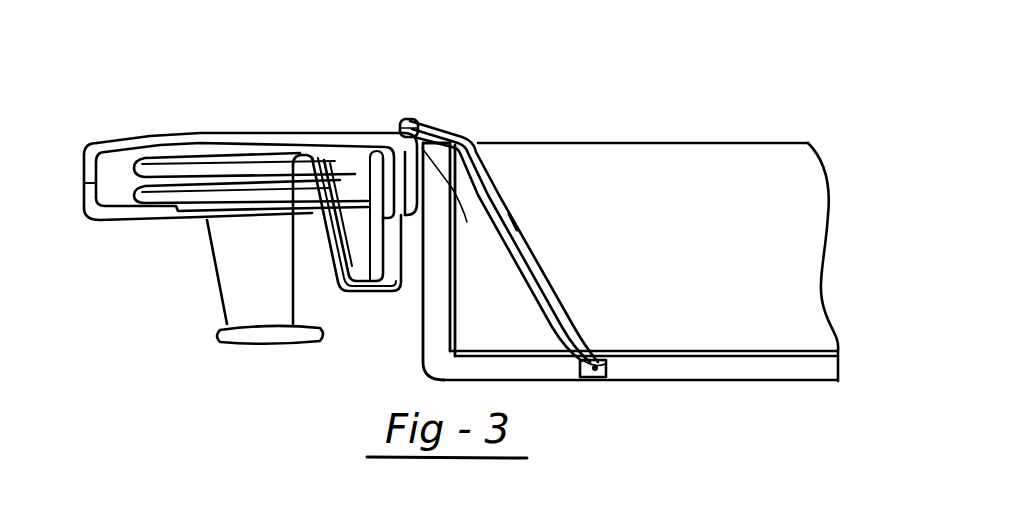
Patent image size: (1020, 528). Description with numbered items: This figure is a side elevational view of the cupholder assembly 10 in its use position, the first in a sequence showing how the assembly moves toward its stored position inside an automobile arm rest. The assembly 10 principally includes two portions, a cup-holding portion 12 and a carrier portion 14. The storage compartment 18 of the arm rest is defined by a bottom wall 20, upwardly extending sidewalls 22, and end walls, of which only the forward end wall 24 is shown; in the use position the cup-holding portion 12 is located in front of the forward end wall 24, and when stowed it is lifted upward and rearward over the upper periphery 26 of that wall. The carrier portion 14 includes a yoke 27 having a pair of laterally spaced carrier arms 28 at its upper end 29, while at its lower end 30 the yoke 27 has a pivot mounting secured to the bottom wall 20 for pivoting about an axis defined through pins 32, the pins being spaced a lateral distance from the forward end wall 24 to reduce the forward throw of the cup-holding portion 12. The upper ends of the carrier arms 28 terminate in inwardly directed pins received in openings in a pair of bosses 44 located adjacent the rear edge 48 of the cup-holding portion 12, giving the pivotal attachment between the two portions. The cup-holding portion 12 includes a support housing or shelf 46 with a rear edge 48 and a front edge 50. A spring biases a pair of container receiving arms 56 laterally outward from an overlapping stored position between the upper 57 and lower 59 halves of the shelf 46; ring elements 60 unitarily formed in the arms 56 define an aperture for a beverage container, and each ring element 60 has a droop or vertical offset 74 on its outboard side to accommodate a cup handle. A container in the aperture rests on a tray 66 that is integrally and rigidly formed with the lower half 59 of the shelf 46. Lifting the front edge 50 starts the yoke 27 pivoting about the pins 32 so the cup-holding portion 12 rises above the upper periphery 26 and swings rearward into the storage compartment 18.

The cupholder assembly 10 is at (551, 80).
The cup-holding portion 12 is at (160, 330).
The carrier portion 14 is at (559, 219).
The storage compartment 18 is at (768, 248).
The bottom wall 20 is at (704, 349).
The sidewalls 22 is at (651, 154).
The forward end wall 24 is at (459, 310).
The upper periphery 26 is at (458, 136).
The yoke 27 is at (537, 263).
The carrier arms 28 is at (465, 134).
The upper end 29 is at (451, 134).
The lower end 30 is at (607, 360).
The pins 32 is at (598, 366).
The bosses 44 is at (404, 123).
The support housing or shelf 46 is at (166, 128).
The rear edge 48 is at (467, 222).
The front edge 50 is at (96, 142).
The container receiving arms 56 is at (262, 133).
The upper half 57 is at (80, 158).
The lower half 59 is at (80, 222).
The ring elements 60 is at (217, 150).
The tray 66 is at (269, 344).
The vertical offset 74 is at (389, 282).